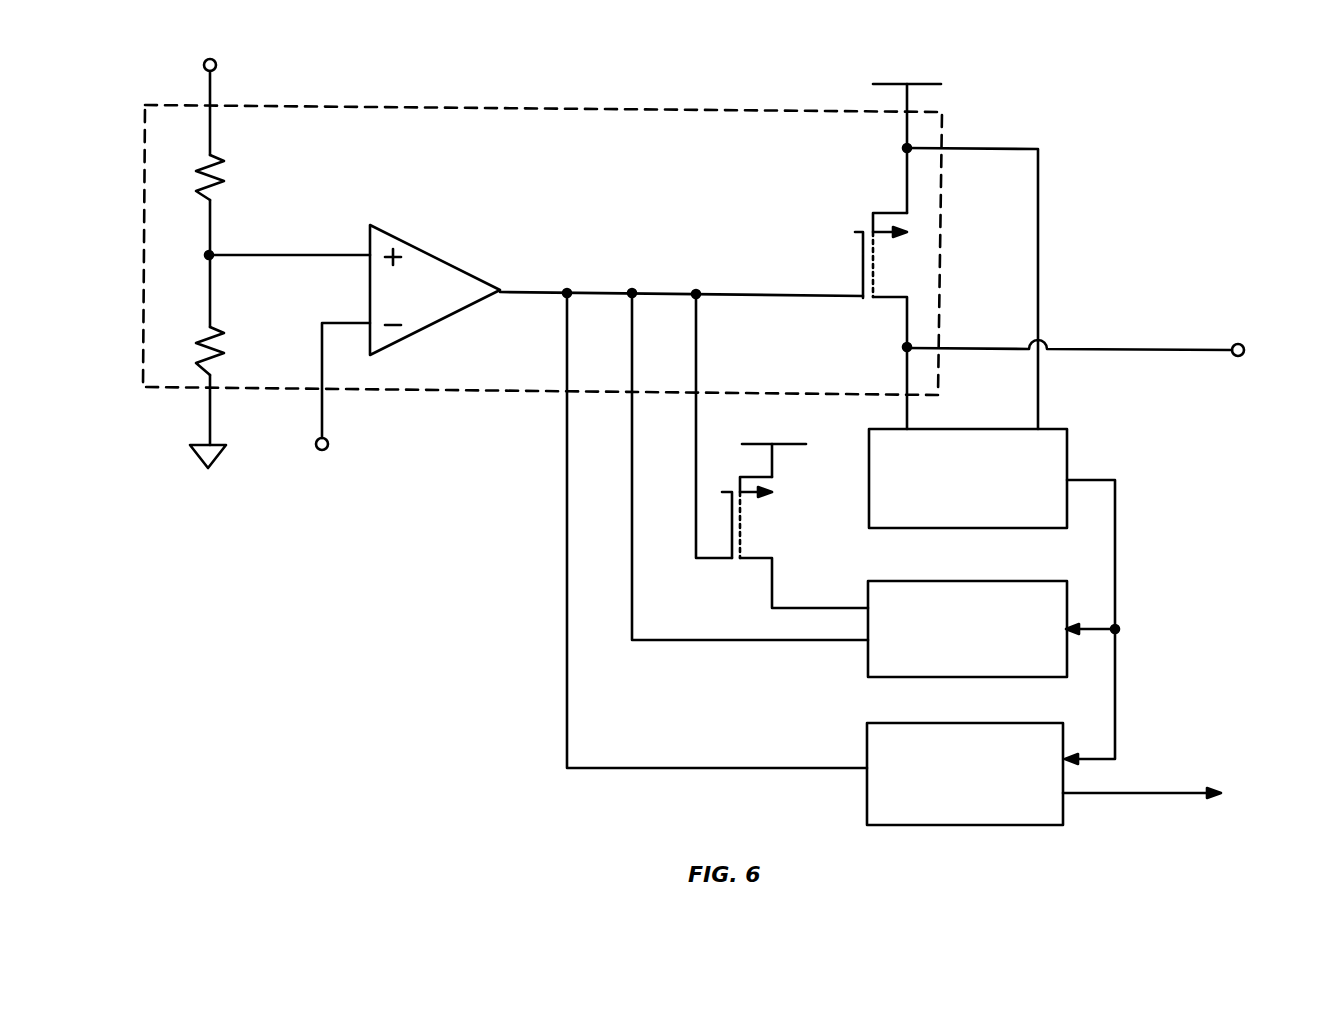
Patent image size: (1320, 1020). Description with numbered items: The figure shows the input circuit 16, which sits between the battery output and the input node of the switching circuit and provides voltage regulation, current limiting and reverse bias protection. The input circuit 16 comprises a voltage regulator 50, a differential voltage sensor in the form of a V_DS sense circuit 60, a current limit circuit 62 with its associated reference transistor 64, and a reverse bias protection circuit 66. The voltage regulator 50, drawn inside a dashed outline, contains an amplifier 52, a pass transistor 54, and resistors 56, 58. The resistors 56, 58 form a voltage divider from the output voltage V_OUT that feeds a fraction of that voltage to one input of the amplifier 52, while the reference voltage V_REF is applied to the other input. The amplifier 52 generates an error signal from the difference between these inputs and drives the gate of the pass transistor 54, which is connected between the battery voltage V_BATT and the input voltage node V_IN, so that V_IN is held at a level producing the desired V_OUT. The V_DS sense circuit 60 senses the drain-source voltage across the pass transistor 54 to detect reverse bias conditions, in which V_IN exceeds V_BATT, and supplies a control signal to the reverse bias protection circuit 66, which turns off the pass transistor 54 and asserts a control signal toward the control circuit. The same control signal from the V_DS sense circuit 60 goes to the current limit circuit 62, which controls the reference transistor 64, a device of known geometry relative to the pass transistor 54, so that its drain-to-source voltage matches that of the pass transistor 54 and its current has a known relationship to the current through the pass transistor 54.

The input circuit 16 is at (1167, 128).
The voltage regulator 50 is at (681, 112).
The amplifier 52 is at (445, 260).
The pass transistor 54 is at (863, 222).
The resistor 56 is at (216, 153).
The resistor 58 is at (216, 328).
The V_DS sense circuit 60 is at (1067, 447).
The current limit circuit 62 is at (905, 682).
The reference transistor 64 is at (770, 511).
The reverse bias protection circuit 66 is at (867, 800).